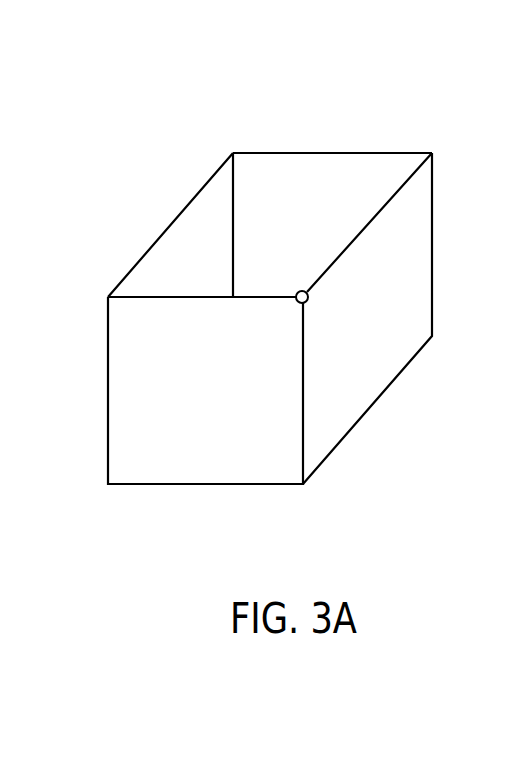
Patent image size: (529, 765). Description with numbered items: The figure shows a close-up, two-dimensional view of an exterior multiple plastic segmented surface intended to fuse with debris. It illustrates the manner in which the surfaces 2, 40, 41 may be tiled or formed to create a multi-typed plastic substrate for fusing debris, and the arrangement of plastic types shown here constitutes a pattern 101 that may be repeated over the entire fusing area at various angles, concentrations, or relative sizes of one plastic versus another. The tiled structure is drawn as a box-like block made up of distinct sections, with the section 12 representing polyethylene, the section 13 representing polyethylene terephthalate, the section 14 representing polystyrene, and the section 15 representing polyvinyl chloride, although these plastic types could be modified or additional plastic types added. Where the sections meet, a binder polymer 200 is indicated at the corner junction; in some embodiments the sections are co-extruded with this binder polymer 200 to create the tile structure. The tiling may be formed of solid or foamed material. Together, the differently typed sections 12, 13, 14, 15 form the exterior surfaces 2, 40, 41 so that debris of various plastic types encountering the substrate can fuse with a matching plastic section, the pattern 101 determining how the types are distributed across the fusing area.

The pattern 101 is at (417, 97).
The surface 2 is at (432, 503).
The surface 40 is at (435, 515).
The surface 41 is at (435, 515).
The section 12 is at (118, 422).
The section 13 is at (182, 242).
The section 14 is at (320, 168).
The section 15 is at (375, 378).
The binder polymer 200 is at (305, 465).